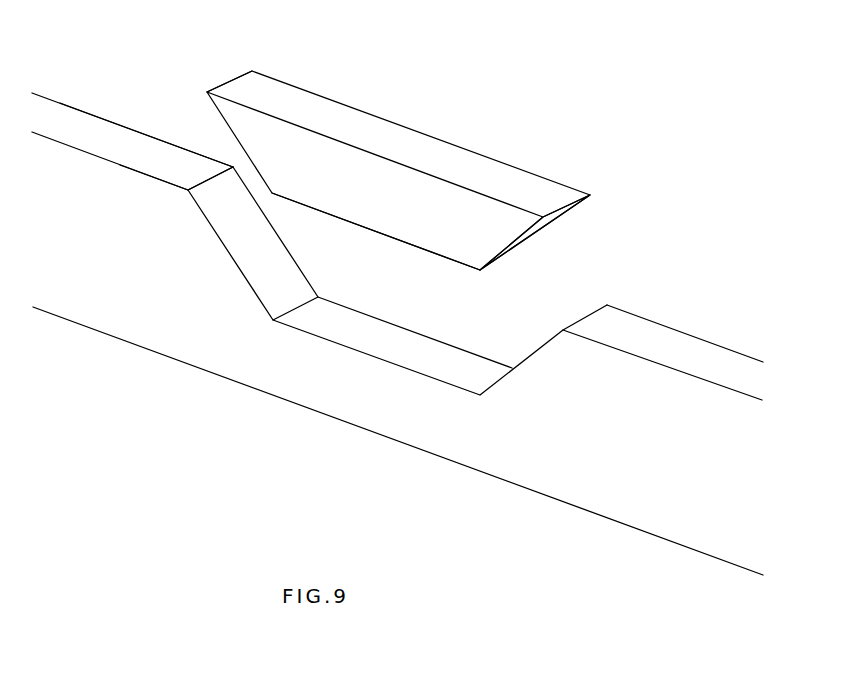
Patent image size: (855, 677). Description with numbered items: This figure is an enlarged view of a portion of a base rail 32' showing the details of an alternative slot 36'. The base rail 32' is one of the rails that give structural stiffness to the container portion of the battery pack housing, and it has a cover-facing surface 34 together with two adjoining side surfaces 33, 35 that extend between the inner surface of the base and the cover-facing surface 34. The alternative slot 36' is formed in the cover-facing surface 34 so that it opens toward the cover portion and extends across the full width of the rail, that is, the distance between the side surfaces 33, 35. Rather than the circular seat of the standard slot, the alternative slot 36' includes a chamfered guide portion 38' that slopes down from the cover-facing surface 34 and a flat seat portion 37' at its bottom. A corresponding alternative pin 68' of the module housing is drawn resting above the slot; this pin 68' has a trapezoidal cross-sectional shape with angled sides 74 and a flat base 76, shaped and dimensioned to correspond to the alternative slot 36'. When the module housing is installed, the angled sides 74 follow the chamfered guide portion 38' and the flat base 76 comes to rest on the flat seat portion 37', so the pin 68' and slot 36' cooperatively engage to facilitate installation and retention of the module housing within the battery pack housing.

The base rail 32' is at (398, 441).
The side surface 33 is at (70, 162).
The cover-facing surface 34 is at (113, 140).
The side surface 35 is at (184, 147).
The alternative slot 36' is at (649, 330).
The flat seat portion 37' is at (440, 406).
The chamfered guide portion 38' is at (209, 278).
The alternative pin 68' is at (398, 170).
The angled sides 74 is at (205, 100).
The flat base 76 is at (385, 237).